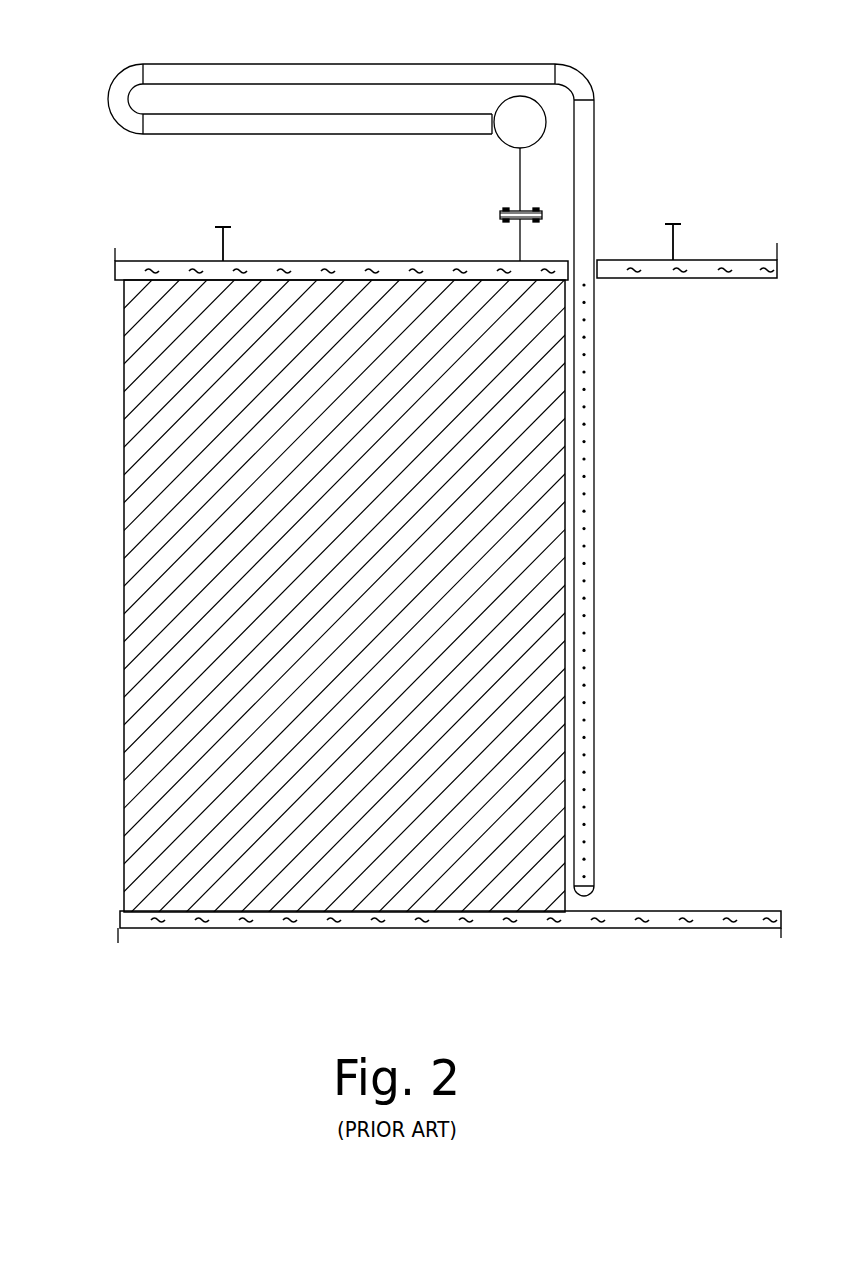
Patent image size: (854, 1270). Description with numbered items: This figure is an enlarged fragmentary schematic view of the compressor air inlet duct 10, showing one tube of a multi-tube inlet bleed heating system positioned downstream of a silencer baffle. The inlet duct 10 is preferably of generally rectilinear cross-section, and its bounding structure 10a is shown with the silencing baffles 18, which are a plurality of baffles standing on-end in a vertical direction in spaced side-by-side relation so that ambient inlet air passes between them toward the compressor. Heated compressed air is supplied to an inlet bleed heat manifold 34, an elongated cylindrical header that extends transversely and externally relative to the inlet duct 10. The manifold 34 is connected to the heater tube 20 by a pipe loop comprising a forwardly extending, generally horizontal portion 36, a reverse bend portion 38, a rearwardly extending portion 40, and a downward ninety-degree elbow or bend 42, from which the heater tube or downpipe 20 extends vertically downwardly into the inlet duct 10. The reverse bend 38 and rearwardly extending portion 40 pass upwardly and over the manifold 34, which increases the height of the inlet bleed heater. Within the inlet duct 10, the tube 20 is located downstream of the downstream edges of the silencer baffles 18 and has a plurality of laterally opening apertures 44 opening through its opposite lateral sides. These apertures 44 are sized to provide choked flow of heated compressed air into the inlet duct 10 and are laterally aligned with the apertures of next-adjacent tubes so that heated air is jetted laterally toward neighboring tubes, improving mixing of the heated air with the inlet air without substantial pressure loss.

The inlet duct 10 is at (313, 235).
The tank roof plate 10a is at (666, 772).
The silencing baffles 18 is at (180, 900).
The heater tubes 20 is at (585, 167).
The inlet bleed heat manifold 34 is at (503, 146).
The forwardly extending horizontal portion 36 is at (333, 125).
The reverse bend portion 38 is at (113, 95).
The rearwardly extending portion 40 is at (320, 75).
The downward elbow 42 is at (580, 82).
The laterally opening apertures 44 is at (594, 610).